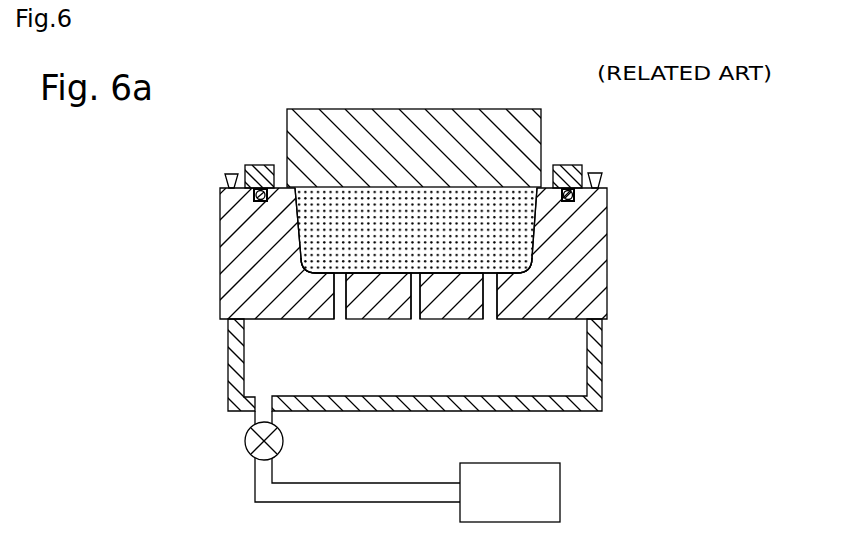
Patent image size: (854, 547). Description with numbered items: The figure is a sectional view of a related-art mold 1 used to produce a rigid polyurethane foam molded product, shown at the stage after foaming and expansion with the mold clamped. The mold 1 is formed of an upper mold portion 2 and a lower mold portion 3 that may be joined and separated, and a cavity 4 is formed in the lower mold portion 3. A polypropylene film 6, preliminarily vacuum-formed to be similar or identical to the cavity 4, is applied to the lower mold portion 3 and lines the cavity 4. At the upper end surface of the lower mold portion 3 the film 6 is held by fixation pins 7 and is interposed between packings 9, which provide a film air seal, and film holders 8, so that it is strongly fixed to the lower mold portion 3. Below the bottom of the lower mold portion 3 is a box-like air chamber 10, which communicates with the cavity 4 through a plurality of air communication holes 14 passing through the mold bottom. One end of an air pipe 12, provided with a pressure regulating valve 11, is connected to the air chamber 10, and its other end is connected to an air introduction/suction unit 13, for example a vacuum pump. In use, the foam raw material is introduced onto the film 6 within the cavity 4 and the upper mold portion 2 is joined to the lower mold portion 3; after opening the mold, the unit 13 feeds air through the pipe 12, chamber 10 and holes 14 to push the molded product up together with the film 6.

The mold 1 is at (608, 157).
The upper mold portion 2 is at (513, 112).
The lower mold portion 3 is at (589, 234).
The cavity 4 is at (508, 228).
The polypropylene film 6 is at (527, 262).
The fixation pins 7 is at (223, 180).
The film holders 8 is at (251, 165).
The packings 9 is at (257, 202).
The air chamber 10 is at (573, 357).
The pressure regulating valve 11 is at (249, 431).
The air pipe 12 is at (262, 486).
The air introduction/suction unit 13 is at (548, 488).
The air communication holes 14 is at (339, 320).